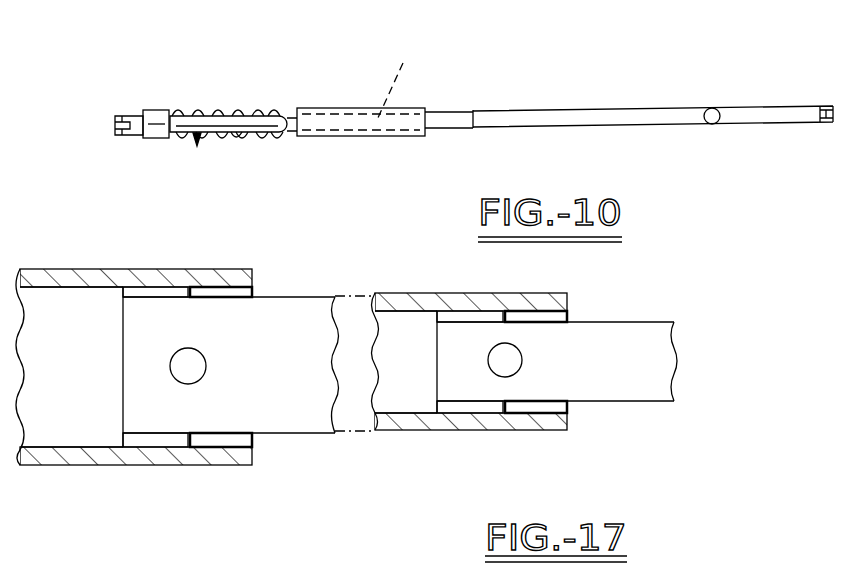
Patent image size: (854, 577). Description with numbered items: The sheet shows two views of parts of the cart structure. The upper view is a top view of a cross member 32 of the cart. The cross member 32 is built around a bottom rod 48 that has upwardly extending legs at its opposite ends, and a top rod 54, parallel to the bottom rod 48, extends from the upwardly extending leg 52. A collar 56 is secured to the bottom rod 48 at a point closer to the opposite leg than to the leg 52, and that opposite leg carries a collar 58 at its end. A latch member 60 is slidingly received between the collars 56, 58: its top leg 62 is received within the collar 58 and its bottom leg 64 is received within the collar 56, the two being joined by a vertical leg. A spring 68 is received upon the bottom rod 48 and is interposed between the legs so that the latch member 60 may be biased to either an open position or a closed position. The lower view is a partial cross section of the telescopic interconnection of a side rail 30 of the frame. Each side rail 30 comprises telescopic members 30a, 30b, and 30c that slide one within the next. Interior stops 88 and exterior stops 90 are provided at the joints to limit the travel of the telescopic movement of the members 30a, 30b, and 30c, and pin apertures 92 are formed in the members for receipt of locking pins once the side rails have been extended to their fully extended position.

In FIG. 17, the side rail 30 is at (141, 249).
In FIG. 17, the telescopic member 30a is at (215, 268).
In FIG. 17, the telescopic member 30b is at (437, 293).
In FIG. 17, the telescopic member 30c is at (622, 322).
In FIG. 10, the cross member 32 is at (621, 98).
In FIG. 10, the bottom rod 48 is at (557, 111).
In FIG. 10, the upwardly extending leg 52 is at (715, 124).
In FIG. 10, the top rod 54 is at (783, 108).
In FIG. 10, the collar 56 is at (355, 108).
In FIG. 10, the collar 58 is at (157, 117).
In FIG. 10, the latch member 60 is at (196, 145).
In FIG. 10, the top leg 62 is at (226, 118).
In FIG. 10, the bottom leg 64 is at (443, 115).
In FIG. 10, the spring 68 is at (236, 141).
In FIG. 17, the interior stop 88 is at (213, 447).
In FIG. 17, the exterior stop 90 is at (160, 447).
In FIG. 17, the pin aperture 92 is at (190, 368).